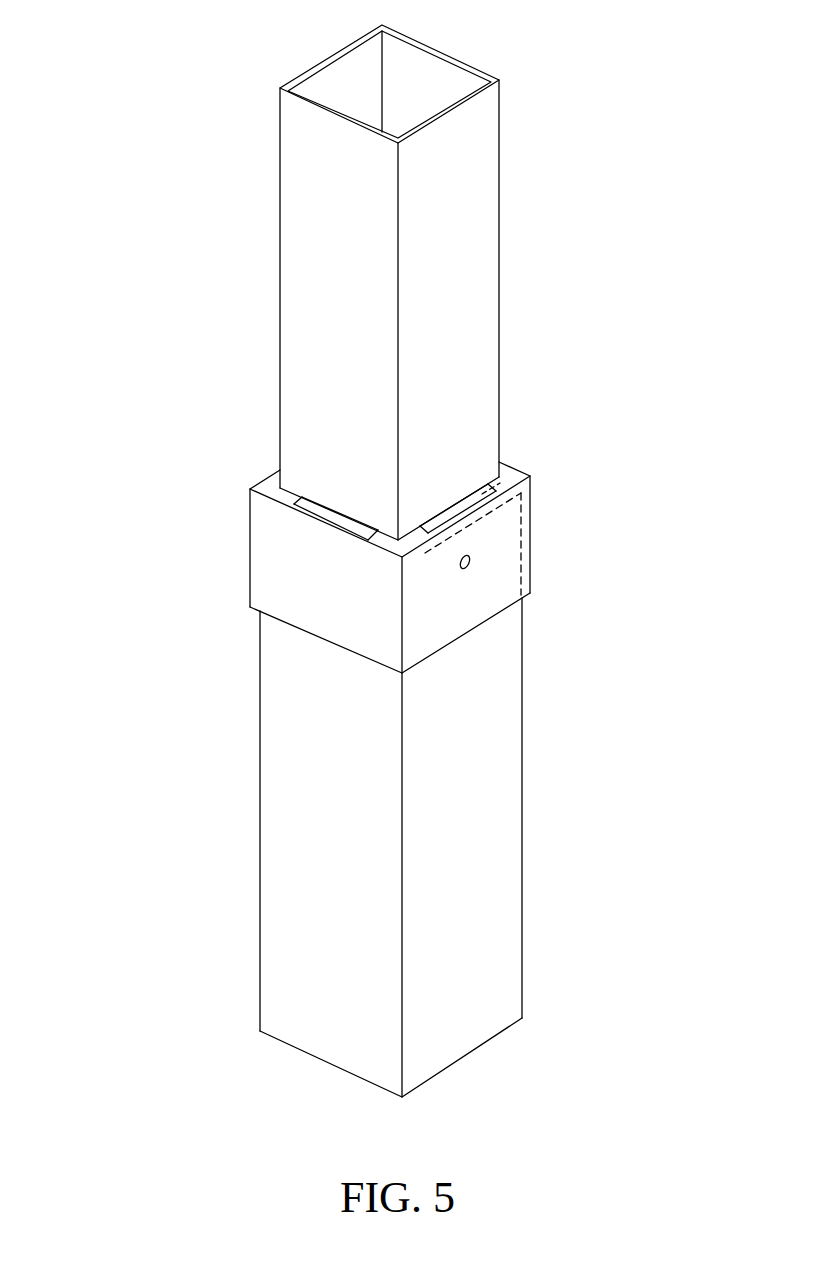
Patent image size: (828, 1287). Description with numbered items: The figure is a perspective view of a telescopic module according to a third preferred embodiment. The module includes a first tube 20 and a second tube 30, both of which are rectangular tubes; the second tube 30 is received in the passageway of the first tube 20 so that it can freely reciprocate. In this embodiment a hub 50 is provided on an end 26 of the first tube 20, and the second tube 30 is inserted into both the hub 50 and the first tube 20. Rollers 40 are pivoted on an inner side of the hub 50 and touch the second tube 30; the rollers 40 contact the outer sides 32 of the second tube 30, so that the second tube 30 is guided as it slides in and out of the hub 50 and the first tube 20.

The first tube 20 is at (485, 787).
The end 26 is at (527, 507).
The second tube 30 is at (497, 221).
The outer sides 32 is at (303, 287).
The rollers 40 is at (322, 508).
The hub 50 is at (280, 563).